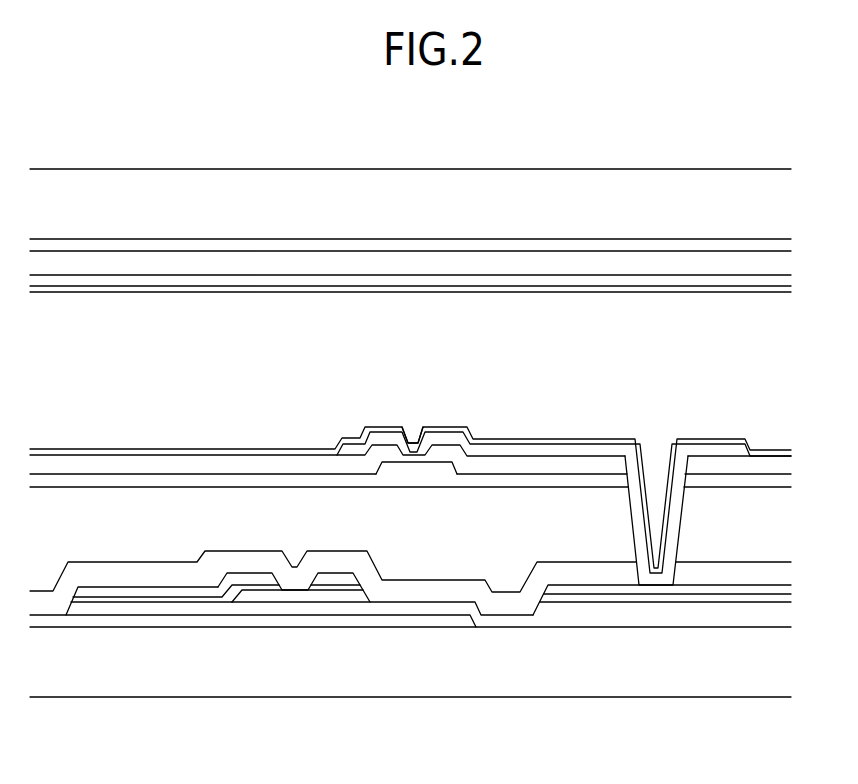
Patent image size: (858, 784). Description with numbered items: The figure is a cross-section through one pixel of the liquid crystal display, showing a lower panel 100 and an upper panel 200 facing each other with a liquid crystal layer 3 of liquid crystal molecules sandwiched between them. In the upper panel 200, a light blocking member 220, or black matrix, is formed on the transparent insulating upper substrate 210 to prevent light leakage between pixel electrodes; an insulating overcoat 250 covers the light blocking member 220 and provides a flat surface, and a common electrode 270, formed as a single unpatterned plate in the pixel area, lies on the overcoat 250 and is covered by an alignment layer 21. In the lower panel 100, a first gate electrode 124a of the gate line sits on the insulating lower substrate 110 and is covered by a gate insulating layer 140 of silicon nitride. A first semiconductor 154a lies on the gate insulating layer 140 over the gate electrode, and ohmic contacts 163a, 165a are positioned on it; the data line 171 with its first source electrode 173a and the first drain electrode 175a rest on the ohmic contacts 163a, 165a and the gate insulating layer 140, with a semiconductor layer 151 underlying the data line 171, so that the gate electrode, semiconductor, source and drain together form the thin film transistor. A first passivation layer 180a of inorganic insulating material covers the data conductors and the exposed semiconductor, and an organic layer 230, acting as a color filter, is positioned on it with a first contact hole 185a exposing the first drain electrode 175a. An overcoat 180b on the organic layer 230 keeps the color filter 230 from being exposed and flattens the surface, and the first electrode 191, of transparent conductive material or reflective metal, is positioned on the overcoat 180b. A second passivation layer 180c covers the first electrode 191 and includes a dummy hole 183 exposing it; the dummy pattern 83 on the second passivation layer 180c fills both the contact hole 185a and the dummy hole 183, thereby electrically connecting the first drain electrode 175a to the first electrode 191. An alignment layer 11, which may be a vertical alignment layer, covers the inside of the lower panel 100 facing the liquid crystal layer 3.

The upper panel 200 is at (796, 169).
The upper substrate 210 is at (222, 188).
The light blocking member 220 is at (294, 245).
The overcoat 250 is at (365, 262).
The common electrode 270 is at (435, 283).
The alignment layer 21 is at (567, 289).
The liquid crystal layer 3 is at (796, 294).
The lower panel 100 is at (796, 450).
The alignment layer 11 is at (590, 438).
The dummy pattern 83 is at (540, 452).
The dummy hole 183 is at (409, 441).
The first electrode 191 is at (443, 468).
The first contact hole 185a is at (657, 457).
The second passivation layer 180c is at (222, 470).
The overcoat 180b is at (165, 482).
The first passivation layer 180a is at (498, 603).
The organic layer 230 is at (97, 498).
The data line 171 is at (98, 590).
The semiconductor layer 151 is at (128, 608).
The ohmic contact 163a is at (158, 600).
The first source electrode 173a is at (213, 589).
The first semiconductor 154a is at (273, 597).
The ohmic contact 165a is at (325, 587).
The first drain electrode 175a is at (347, 580).
The first gate electrode 124a is at (422, 620).
The gate insulating layer 140 is at (560, 620).
The lower substrate 110 is at (642, 670).